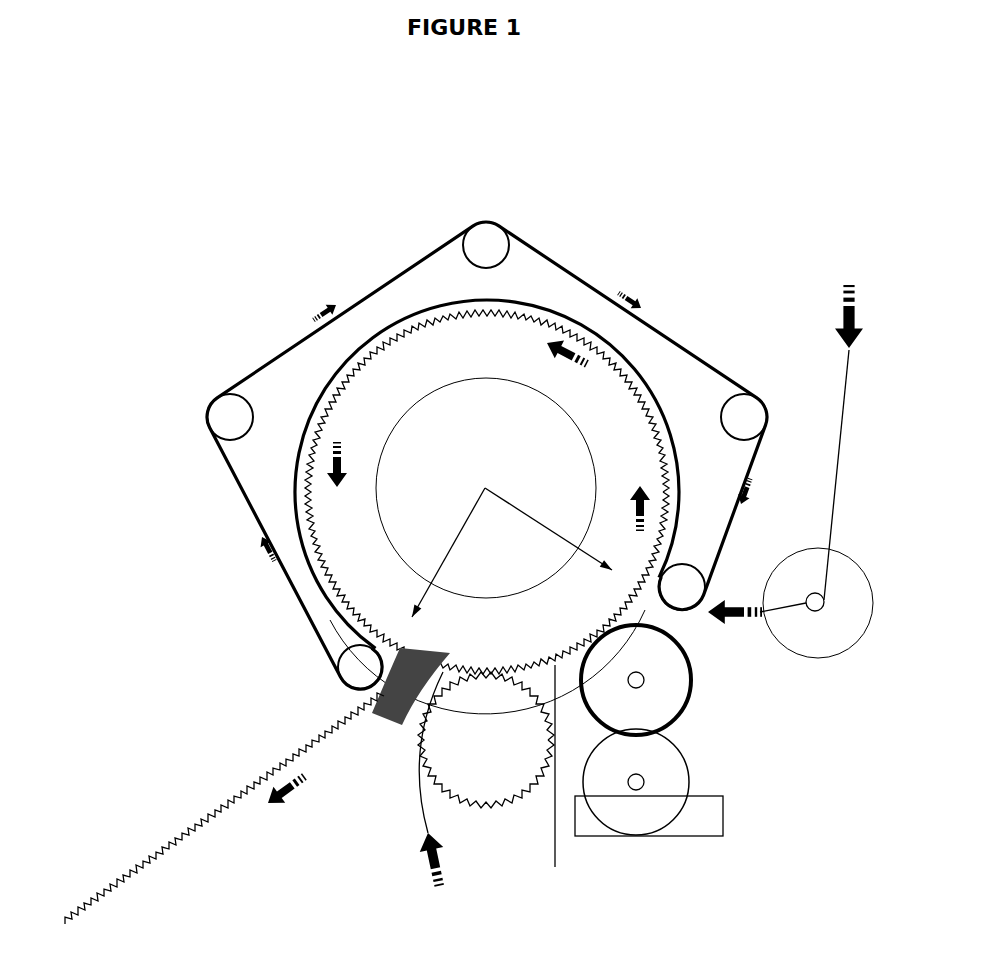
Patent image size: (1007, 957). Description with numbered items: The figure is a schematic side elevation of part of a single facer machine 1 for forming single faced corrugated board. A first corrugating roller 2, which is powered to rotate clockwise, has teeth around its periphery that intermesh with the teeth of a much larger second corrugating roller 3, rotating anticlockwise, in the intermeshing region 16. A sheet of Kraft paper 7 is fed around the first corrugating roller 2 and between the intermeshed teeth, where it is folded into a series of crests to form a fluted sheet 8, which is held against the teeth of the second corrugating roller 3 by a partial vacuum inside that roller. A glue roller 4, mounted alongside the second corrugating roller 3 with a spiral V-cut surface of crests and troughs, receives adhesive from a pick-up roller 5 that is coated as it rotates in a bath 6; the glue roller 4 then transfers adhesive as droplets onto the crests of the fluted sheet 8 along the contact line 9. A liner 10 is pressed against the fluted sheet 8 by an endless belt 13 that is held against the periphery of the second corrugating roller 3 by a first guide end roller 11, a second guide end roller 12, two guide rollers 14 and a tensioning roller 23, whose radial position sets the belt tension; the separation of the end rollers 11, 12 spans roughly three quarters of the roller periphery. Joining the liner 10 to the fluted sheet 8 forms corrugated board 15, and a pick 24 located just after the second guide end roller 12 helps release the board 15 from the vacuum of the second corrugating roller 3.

The single facer machine portion 1 is at (196, 497).
The first corrugating roller 2 is at (480, 750).
The second corrugating roller 3 is at (490, 420).
The glue roller 4 is at (665, 697).
The pick-up roller 5 is at (665, 790).
The bath 6 is at (700, 828).
The sheet of Kraft paper 7 is at (418, 797).
The fluted sheet 8 is at (555, 779).
The contact line 9 is at (610, 640).
The liner 10 is at (840, 395).
The first guide end roller 11 is at (682, 587).
The second guide end roller 12 is at (360, 667).
The endless belt 13 is at (380, 288).
The guide rollers 14 is at (230, 417).
The corrugated board 15 is at (170, 845).
The intermeshing region 16 is at (492, 667).
The tensioning roller 23 is at (486, 245).
The pick 24 is at (372, 718).